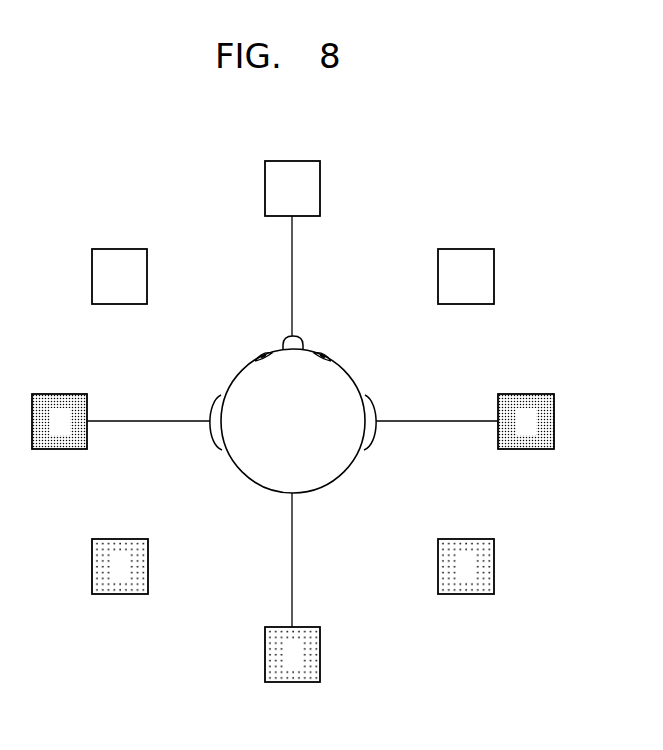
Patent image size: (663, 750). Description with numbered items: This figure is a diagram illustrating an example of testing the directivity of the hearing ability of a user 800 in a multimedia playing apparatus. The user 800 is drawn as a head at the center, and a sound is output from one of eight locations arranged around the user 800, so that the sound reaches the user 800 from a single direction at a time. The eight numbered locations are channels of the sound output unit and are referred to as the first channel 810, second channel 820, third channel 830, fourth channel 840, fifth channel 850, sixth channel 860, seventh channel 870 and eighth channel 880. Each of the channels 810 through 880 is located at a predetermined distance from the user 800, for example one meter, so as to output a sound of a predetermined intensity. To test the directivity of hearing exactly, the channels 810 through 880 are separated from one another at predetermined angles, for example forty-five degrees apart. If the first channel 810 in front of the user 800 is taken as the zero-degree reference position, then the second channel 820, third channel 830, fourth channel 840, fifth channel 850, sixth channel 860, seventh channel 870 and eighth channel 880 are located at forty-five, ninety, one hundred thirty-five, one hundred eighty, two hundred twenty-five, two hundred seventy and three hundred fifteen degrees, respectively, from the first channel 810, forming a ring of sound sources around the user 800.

The user 800 is at (348, 374).
The first channel 810 is at (321, 177).
The second channel 820 is at (467, 249).
The third channel 830 is at (530, 394).
The fourth channel 840 is at (465, 539).
The fifth channel 850 is at (308, 627).
The sixth channel 860 is at (124, 539).
The seventh channel 870 is at (67, 394).
The eighth channel 880 is at (126, 249).